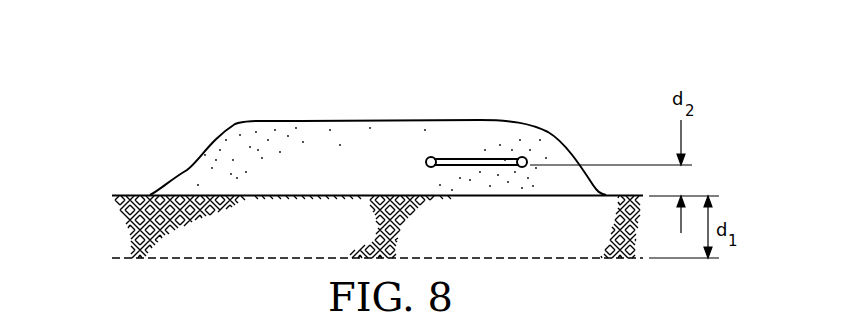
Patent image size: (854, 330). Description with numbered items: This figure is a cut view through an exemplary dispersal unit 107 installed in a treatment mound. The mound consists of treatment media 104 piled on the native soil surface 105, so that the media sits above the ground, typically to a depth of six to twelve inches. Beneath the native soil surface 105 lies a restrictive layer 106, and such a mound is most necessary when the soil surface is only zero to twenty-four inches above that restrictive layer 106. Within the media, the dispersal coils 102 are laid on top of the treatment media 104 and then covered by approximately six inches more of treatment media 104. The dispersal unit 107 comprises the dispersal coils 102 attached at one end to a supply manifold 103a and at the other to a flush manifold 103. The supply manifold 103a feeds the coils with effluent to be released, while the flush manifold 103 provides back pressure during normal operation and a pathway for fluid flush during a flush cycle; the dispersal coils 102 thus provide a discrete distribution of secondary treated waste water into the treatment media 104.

The dispersal coil 102 is at (465, 158).
The flush manifold 103 is at (522, 168).
The supply manifold 103a is at (431, 156).
The treatment media 104 is at (334, 170).
The native soil surface 105 is at (128, 195).
The restrictive layer 106 is at (297, 257).
The dispersal unit 107 is at (487, 138).